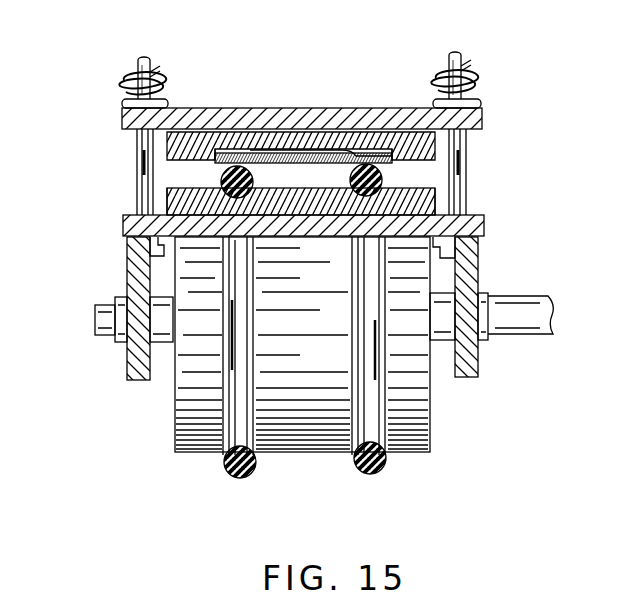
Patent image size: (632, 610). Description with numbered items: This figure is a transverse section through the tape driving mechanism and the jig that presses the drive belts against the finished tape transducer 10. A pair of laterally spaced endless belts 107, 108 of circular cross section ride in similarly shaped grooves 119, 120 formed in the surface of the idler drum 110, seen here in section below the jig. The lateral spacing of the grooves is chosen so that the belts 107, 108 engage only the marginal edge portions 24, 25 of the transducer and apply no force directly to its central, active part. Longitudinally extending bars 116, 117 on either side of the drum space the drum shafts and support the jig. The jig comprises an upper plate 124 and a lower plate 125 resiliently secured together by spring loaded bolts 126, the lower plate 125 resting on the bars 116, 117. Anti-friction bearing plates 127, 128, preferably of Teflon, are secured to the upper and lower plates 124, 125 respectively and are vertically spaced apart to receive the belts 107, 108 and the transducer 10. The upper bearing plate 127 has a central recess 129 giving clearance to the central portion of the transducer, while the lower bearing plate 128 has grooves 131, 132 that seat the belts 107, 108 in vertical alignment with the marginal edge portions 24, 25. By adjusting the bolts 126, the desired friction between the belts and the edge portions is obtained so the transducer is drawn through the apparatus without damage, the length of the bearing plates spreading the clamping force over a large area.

The tape transducer 10 is at (283, 155).
The marginal edge portion 24 is at (222, 152).
The marginal edge portion 25 is at (379, 158).
The endless belt 107 is at (230, 478).
The endless belt 108 is at (380, 472).
The idler drum 110 is at (420, 393).
The bar 116 is at (128, 358).
The bar 117 is at (478, 360).
The groove 119 is at (240, 405).
The groove 120 is at (372, 418).
The upper plate 124 is at (483, 116).
The lower plate 125 is at (484, 226).
The spring loaded bolt 126 is at (140, 61).
The upper bearing plate 127 is at (170, 150).
The lower bearing plate 128 is at (170, 205).
The central recess 129 is at (313, 148).
The groove 131 is at (170, 197).
The groove 132 is at (437, 200).